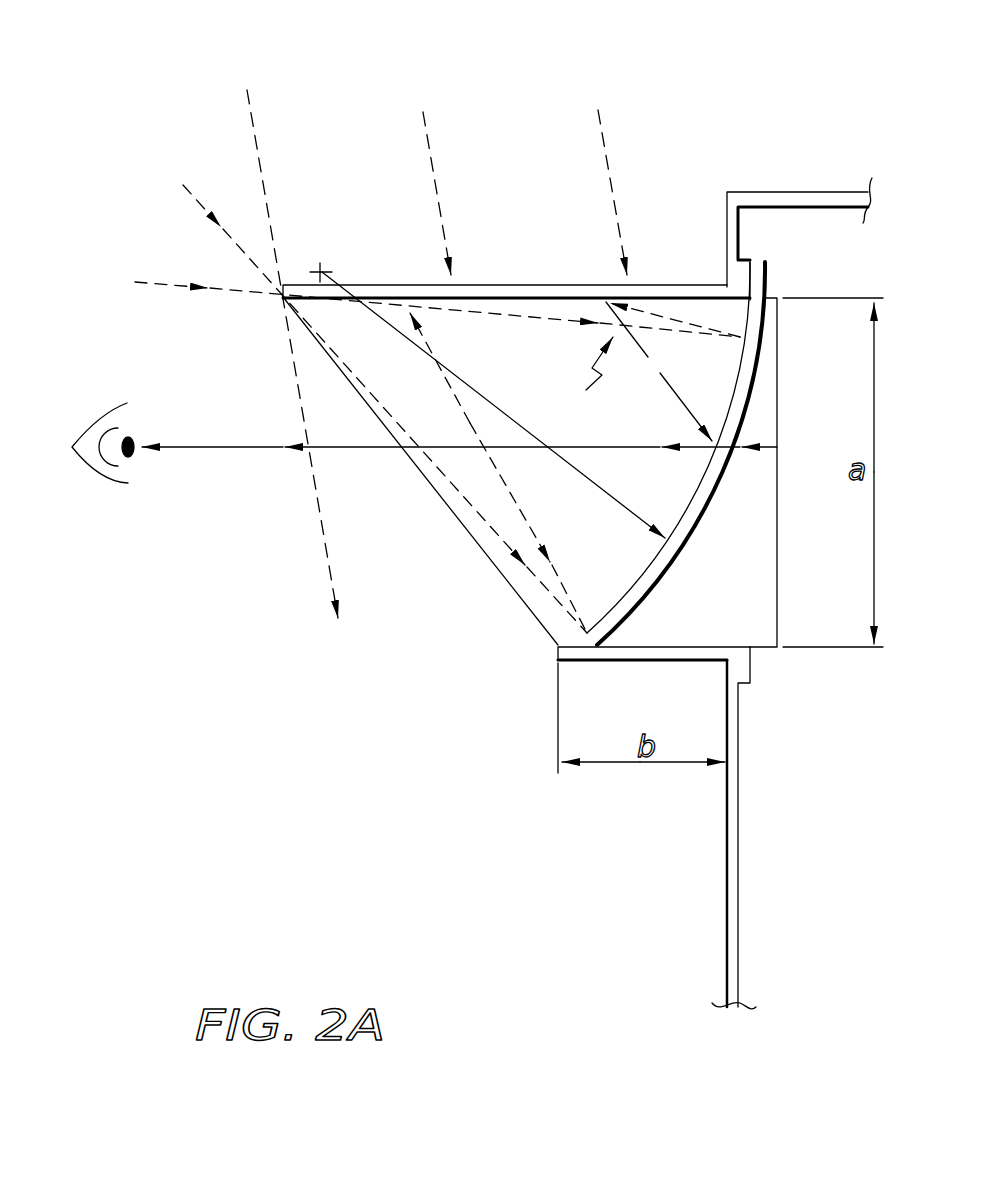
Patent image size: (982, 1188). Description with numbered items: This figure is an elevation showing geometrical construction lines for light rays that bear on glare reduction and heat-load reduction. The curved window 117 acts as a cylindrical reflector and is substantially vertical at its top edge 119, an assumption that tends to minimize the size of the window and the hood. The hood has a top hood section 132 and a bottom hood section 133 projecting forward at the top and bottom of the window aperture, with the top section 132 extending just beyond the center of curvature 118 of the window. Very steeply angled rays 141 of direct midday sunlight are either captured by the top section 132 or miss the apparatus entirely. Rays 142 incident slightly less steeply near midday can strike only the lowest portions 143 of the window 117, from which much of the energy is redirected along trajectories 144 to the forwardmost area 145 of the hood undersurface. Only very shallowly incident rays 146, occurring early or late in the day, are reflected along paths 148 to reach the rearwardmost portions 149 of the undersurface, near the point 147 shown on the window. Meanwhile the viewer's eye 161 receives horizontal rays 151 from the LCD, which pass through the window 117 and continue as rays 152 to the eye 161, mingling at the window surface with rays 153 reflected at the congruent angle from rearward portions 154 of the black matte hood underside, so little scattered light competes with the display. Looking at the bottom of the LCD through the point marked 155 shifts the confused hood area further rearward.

The window 117 is at (740, 408).
The center of curvature 118 is at (323, 270).
The top edge 119 is at (760, 260).
The top hood section 132 is at (492, 297).
The bottom hood section 133 is at (587, 661).
The very steeply angled rays 141 is at (263, 187).
The rays incident near midday 142 is at (210, 213).
The lowest portions of the window 143 is at (590, 632).
The trajectories 144 is at (497, 467).
The forwardmost area of the hood undersurface 145 is at (410, 310).
The very shallowly incident rays 146 is at (193, 293).
The point on curved surface 147 is at (742, 324).
The paths 148 is at (671, 318).
The rearwardmost portions of the hood undersurface 149 is at (595, 300).
The horizontal rays from the LCD 151 is at (750, 452).
The rays to the eye 152 is at (347, 449).
The reflected rays 153 is at (661, 377).
The portions of the hood undersurface 154 is at (575, 374).
The point on the window 155 is at (645, 568).
The viewer's eye 161 is at (95, 437).